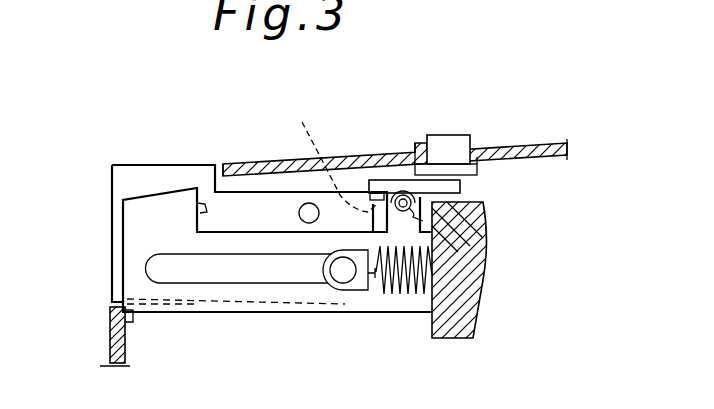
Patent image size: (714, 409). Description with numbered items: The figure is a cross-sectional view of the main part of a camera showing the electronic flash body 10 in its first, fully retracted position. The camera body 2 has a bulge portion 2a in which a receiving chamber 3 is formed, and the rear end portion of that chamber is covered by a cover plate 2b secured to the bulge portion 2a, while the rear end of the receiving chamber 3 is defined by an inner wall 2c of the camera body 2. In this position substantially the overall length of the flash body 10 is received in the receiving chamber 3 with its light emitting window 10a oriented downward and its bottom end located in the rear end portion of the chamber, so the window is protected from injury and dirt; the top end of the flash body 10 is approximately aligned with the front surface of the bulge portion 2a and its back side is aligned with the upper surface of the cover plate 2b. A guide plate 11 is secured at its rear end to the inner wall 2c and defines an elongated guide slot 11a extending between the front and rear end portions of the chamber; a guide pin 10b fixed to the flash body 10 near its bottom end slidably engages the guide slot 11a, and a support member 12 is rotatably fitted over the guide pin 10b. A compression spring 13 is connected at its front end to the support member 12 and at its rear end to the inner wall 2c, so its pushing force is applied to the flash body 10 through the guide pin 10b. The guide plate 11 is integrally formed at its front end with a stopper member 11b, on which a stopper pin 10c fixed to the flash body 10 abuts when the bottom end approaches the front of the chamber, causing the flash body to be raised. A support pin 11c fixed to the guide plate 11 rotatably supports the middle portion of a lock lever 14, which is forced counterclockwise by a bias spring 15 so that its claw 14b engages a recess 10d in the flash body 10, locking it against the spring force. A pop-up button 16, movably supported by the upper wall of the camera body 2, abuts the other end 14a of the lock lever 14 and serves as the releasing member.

The camera body 2 is at (542, 140).
The bulge portion 2a is at (110, 332).
The cover plate 2b is at (378, 152).
The inner wall 2c is at (476, 273).
The receiving chamber 3 is at (262, 184).
The electronic flash body 10 is at (126, 172).
The light emitting window 10a is at (172, 306).
The guide pin 10b is at (341, 273).
The stopper pin 10c is at (307, 205).
The recess 10d is at (328, 154).
The guide plate 11 is at (255, 306).
The guide slot 11a is at (189, 278).
The stopper member 11b is at (205, 210).
The support pin 11c is at (482, 204).
The support member 12 is at (357, 294).
The compression spring 13 is at (400, 294).
The lock lever 14 is at (407, 168).
The other end of the lock lever 14a is at (458, 182).
The claw 14b is at (364, 190).
The bias spring 15 is at (430, 222).
The pop-up button 16 is at (458, 142).